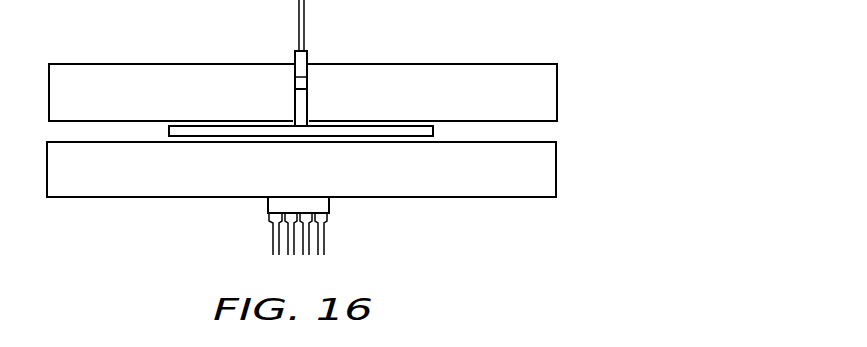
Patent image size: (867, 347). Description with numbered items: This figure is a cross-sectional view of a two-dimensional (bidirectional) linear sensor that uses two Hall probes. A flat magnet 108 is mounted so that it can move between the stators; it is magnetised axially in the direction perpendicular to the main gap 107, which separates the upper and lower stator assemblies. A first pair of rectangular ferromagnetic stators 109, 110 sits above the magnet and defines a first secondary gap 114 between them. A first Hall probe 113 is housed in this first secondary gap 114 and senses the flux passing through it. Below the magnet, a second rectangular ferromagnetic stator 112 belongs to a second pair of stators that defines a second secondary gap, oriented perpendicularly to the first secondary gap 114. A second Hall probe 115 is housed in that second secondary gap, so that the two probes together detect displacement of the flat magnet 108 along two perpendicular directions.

The main gap 107 is at (538, 133).
The flat magnet 108 is at (193, 129).
The first rectangular ferromagnetic stator 109 is at (100, 68).
The first rectangular ferromagnetic stator 110 is at (509, 65).
The second rectangular ferromagnetic stator 112 is at (548, 175).
The Hall probe 113 is at (297, 58).
The first secondary gap 114 is at (303, 98).
The Hall probe 115 is at (323, 218).